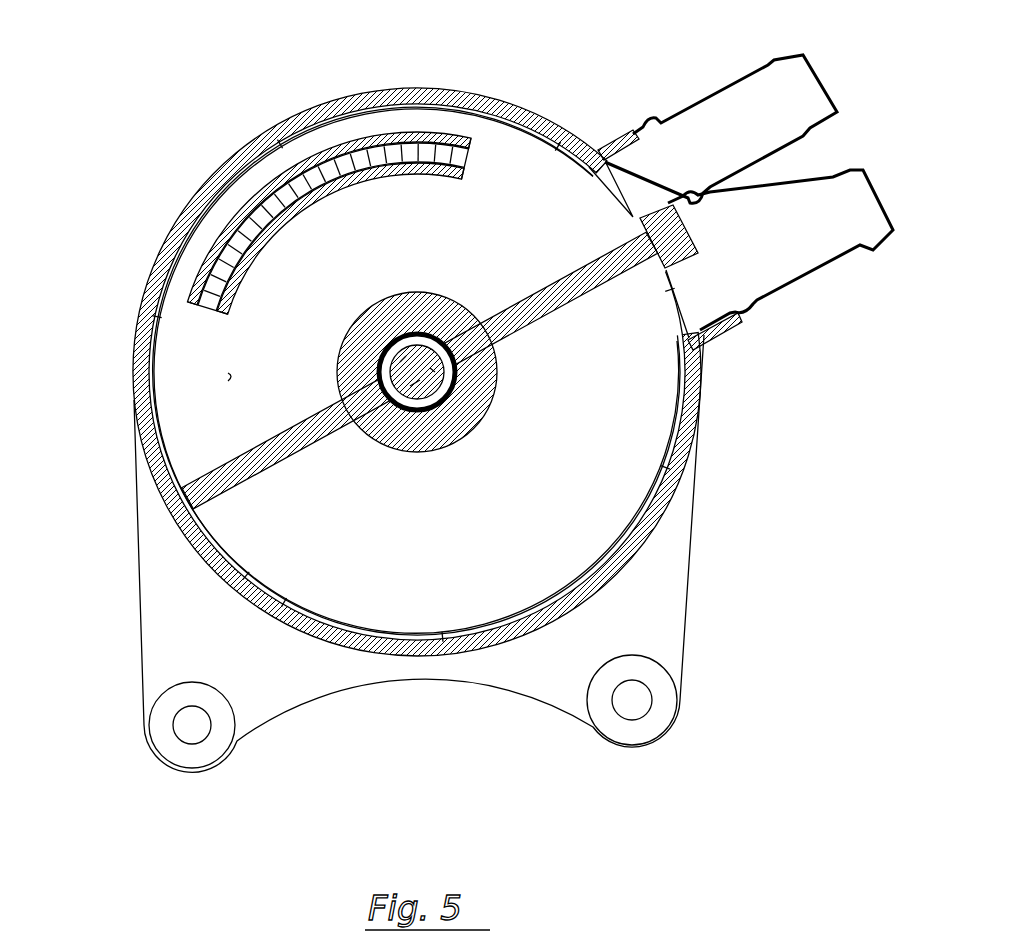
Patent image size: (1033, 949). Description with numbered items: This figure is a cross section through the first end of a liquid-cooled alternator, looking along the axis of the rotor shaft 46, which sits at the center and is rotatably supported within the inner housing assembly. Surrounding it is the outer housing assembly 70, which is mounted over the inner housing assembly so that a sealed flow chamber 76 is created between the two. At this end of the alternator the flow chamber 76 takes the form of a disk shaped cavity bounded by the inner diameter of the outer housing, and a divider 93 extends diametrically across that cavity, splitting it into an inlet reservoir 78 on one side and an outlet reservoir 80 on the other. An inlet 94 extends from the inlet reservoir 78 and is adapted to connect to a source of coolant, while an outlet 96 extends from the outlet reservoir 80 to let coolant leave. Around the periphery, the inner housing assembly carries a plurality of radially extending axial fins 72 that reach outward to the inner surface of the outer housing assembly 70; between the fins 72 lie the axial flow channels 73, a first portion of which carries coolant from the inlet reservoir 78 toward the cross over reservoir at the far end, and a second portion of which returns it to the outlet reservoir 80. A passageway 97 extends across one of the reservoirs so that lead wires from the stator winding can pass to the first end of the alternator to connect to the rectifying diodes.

The rotor shaft 46 is at (397, 403).
The outer housing assembly 70 is at (640, 556).
The radially extending axial fins 72 is at (243, 150).
The axial flow channels 73 is at (400, 100).
The flow chamber 76 is at (298, 284).
The inlet reservoir 78 is at (546, 482).
The outlet reservoir 80 is at (228, 373).
The divider 93 is at (542, 317).
The inlet 94 is at (820, 255).
The outlet 96 is at (750, 100).
The passageway 97 is at (300, 188).